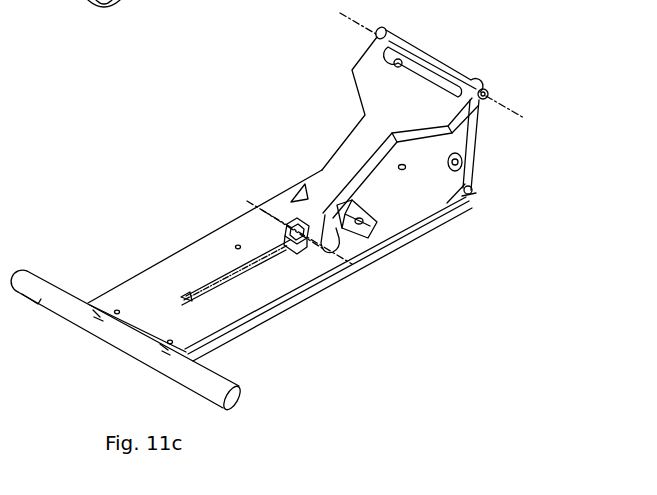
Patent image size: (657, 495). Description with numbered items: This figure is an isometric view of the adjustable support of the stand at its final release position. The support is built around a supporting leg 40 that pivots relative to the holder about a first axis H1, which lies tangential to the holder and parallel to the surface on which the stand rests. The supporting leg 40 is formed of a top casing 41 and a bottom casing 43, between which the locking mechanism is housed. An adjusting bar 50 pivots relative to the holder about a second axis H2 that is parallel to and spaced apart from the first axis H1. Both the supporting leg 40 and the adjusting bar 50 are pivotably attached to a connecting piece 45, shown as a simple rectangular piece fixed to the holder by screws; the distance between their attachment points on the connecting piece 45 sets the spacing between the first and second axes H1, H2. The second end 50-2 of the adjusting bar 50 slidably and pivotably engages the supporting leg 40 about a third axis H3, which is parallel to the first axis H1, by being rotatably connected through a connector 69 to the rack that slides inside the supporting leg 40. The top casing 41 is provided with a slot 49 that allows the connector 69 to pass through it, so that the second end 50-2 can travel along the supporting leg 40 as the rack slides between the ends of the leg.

The supporting leg 40 is at (216, 231).
The top casing 41 is at (176, 267).
The bottom casing 43 is at (430, 233).
The connecting piece 45 is at (477, 150).
The slot 49 is at (232, 283).
The adjusting bar 50 is at (352, 157).
The second end of the adjusting bar 50-2 is at (340, 254).
The connector 69 is at (291, 236).
The first axis H1 is at (472, 192).
The second axis H2 is at (489, 94).
The third axis H3 is at (247, 201).